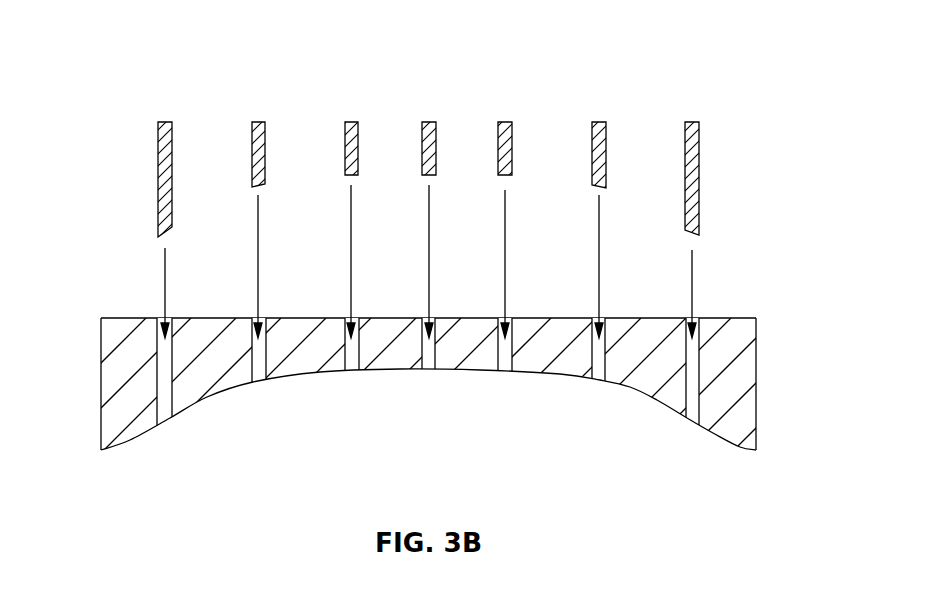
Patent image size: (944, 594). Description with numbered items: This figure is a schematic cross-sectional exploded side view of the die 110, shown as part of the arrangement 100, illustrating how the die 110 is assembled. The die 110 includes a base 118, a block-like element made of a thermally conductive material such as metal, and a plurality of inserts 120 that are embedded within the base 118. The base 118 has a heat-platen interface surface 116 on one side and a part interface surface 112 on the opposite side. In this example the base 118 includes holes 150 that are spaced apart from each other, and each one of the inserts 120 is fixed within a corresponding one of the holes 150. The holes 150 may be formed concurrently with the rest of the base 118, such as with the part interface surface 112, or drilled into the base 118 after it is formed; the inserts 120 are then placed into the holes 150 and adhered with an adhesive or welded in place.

The assembly / device 100 is at (775, 58).
The die 110 is at (750, 380).
The part interface surface 112 is at (188, 412).
The heat-platen interface surface 116 is at (132, 318).
The base 118 is at (730, 344).
The inserts 120 is at (172, 145).
The holes 150 is at (158, 389).